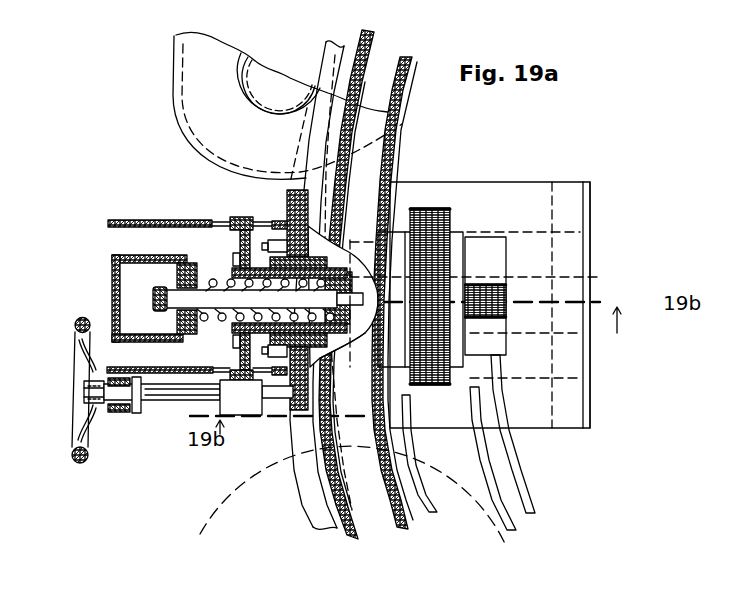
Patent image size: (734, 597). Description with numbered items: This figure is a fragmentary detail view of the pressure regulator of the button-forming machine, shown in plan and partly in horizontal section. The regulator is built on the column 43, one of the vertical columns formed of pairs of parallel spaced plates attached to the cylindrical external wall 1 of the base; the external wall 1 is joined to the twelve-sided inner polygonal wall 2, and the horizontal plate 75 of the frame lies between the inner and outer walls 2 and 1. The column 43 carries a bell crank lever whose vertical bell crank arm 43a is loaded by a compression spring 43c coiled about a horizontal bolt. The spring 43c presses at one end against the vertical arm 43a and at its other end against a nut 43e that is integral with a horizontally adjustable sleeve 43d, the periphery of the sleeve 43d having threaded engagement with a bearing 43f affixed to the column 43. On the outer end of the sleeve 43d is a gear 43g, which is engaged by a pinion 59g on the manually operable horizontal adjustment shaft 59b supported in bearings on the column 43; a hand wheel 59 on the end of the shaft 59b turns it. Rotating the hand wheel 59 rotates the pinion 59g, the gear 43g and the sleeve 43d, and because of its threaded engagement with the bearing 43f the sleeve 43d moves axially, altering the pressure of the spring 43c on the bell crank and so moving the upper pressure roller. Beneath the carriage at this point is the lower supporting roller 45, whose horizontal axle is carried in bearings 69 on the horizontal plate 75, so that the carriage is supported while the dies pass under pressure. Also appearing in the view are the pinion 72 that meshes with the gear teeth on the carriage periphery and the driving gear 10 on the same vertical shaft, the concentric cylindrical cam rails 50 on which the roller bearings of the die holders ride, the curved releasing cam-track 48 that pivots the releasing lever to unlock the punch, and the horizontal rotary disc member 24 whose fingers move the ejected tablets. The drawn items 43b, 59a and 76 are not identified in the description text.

The external wall 1 is at (330, 503).
The polygonal wall 2 is at (590, 210).
The driving gear 10 is at (220, 117).
The rotary disc member 24 is at (253, 503).
The column 43 is at (133, 220).
The vertical bell crank arm 43a is at (133, 255).
The shaft 43b is at (153, 291).
The compression spring 43c is at (212, 280).
The horizontally adjustable sleeve 43d is at (330, 346).
The nut 43e is at (328, 270).
The bearing 43f is at (287, 210).
The gear 43g is at (233, 220).
The lower supporting roller 45 is at (440, 210).
The releasing cam-track 48 is at (512, 463).
The cam rails 50 is at (497, 497).
The hand wheel 59 is at (80, 340).
The nut 59a is at (84, 391).
The adjustment shaft 59b is at (170, 402).
The pinion 59g is at (240, 404).
The bearings 69 is at (507, 293).
The pinion 72 is at (263, 80).
The horizontal plate 75 is at (507, 213).
The tube wall 76 is at (375, 83).